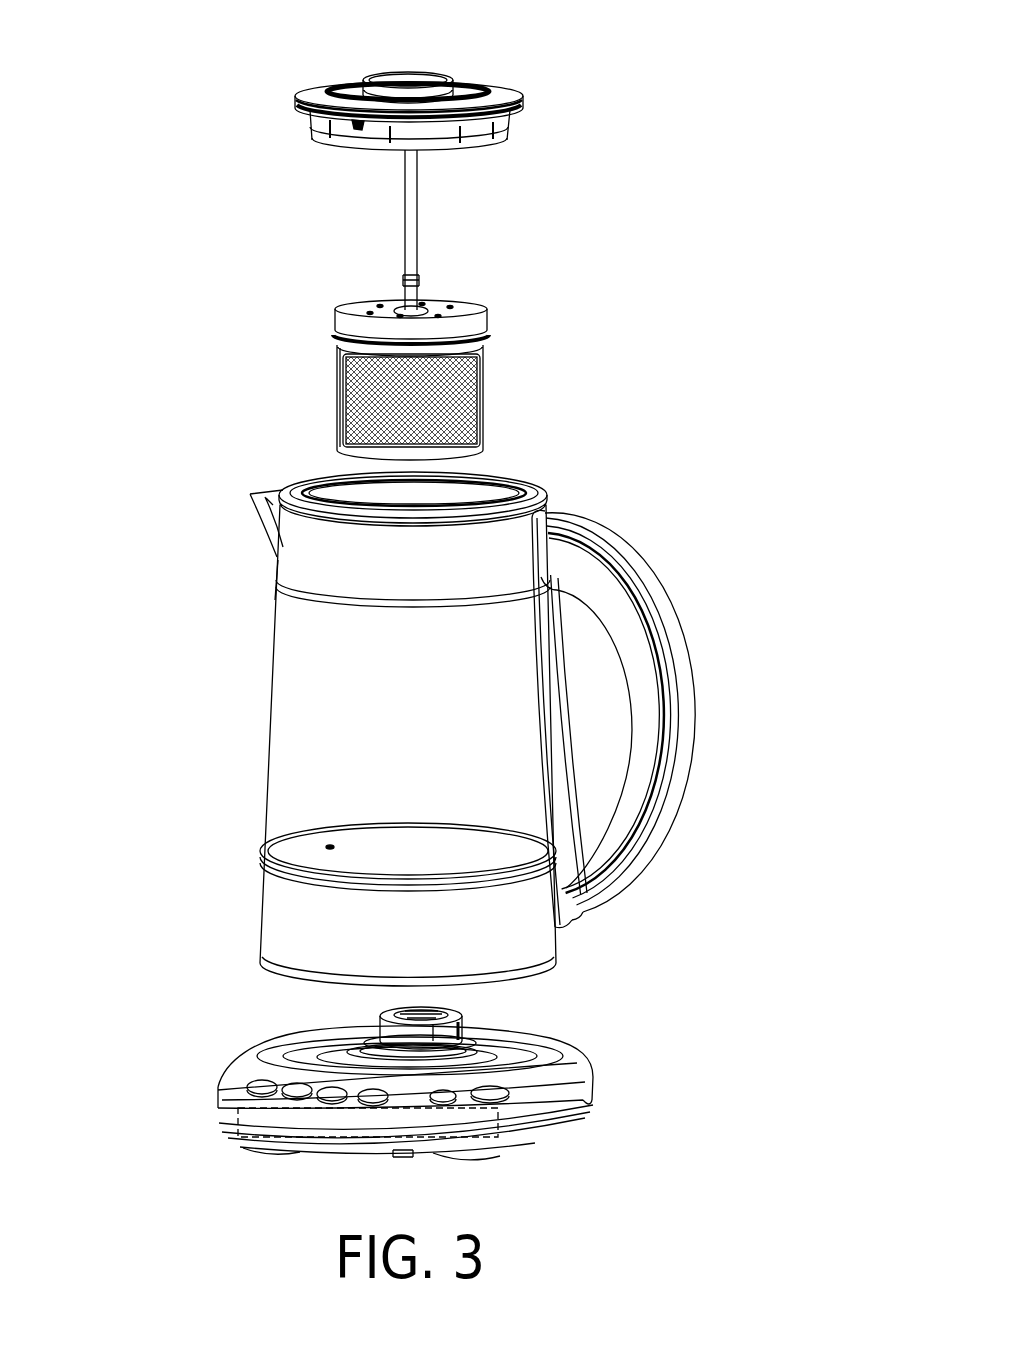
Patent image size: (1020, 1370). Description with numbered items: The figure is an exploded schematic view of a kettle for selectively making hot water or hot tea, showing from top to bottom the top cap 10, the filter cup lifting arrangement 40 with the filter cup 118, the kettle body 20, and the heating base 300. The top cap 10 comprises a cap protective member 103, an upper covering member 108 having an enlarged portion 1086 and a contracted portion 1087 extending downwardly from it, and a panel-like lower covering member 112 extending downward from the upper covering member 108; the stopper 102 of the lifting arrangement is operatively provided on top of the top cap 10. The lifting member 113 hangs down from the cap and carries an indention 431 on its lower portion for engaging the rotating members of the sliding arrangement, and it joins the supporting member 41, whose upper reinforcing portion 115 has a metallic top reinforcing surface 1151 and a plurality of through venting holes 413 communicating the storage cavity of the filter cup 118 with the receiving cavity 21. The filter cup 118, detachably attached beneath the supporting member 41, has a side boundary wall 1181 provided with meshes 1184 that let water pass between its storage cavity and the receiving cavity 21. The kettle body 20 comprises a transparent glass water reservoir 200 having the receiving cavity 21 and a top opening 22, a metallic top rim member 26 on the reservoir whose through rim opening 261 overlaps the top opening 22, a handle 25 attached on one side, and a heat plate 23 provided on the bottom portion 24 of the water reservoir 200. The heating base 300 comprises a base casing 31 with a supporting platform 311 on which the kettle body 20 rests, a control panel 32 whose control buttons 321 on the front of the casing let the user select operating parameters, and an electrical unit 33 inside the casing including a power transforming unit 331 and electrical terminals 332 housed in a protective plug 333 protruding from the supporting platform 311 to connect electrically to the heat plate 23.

The top cap 10 is at (557, 75).
The cap protective member 103 is at (313, 92).
The stopper 102 is at (410, 80).
The upper covering member 108 is at (488, 125).
The enlarged portion 1086 is at (293, 108).
The contracted portion 1087 is at (323, 128).
The lower covering member 112 is at (373, 145).
The lifting member 113 is at (407, 180).
The indention 431 is at (421, 276).
The through venting holes 413 is at (449, 305).
The filter cup lifting arrangement 40 is at (496, 216).
The upper reinforcing portion 115 is at (484, 308).
The top reinforcing surface 1151 is at (360, 310).
The supporting member 41 is at (483, 321).
The filter cup 118 is at (483, 412).
The meshes 1184 is at (387, 410).
The side boundary wall 1181 is at (337, 393).
The kettle body 20 is at (480, 83).
The top rim member 26 is at (328, 492).
The top opening 22 is at (467, 503).
The through rim opening 261 is at (383, 503).
The receiving cavity 21 is at (305, 688).
The heat plate 23 is at (320, 846).
The bottom portion 24 is at (566, 764).
The handle 25 is at (655, 688).
The water reservoir 200 is at (495, 745).
The heating base 300 is at (688, 991).
The base casing 31 is at (578, 1090).
The supporting platform 311 is at (307, 1057).
The protective plug 333 is at (428, 1022).
The electrical terminals 332 is at (465, 1038).
The electrical unit 33 is at (223, 1115).
The power transforming unit 331 is at (293, 1120).
The control panel 32 is at (345, 1122).
The control buttons 321 is at (490, 1094).